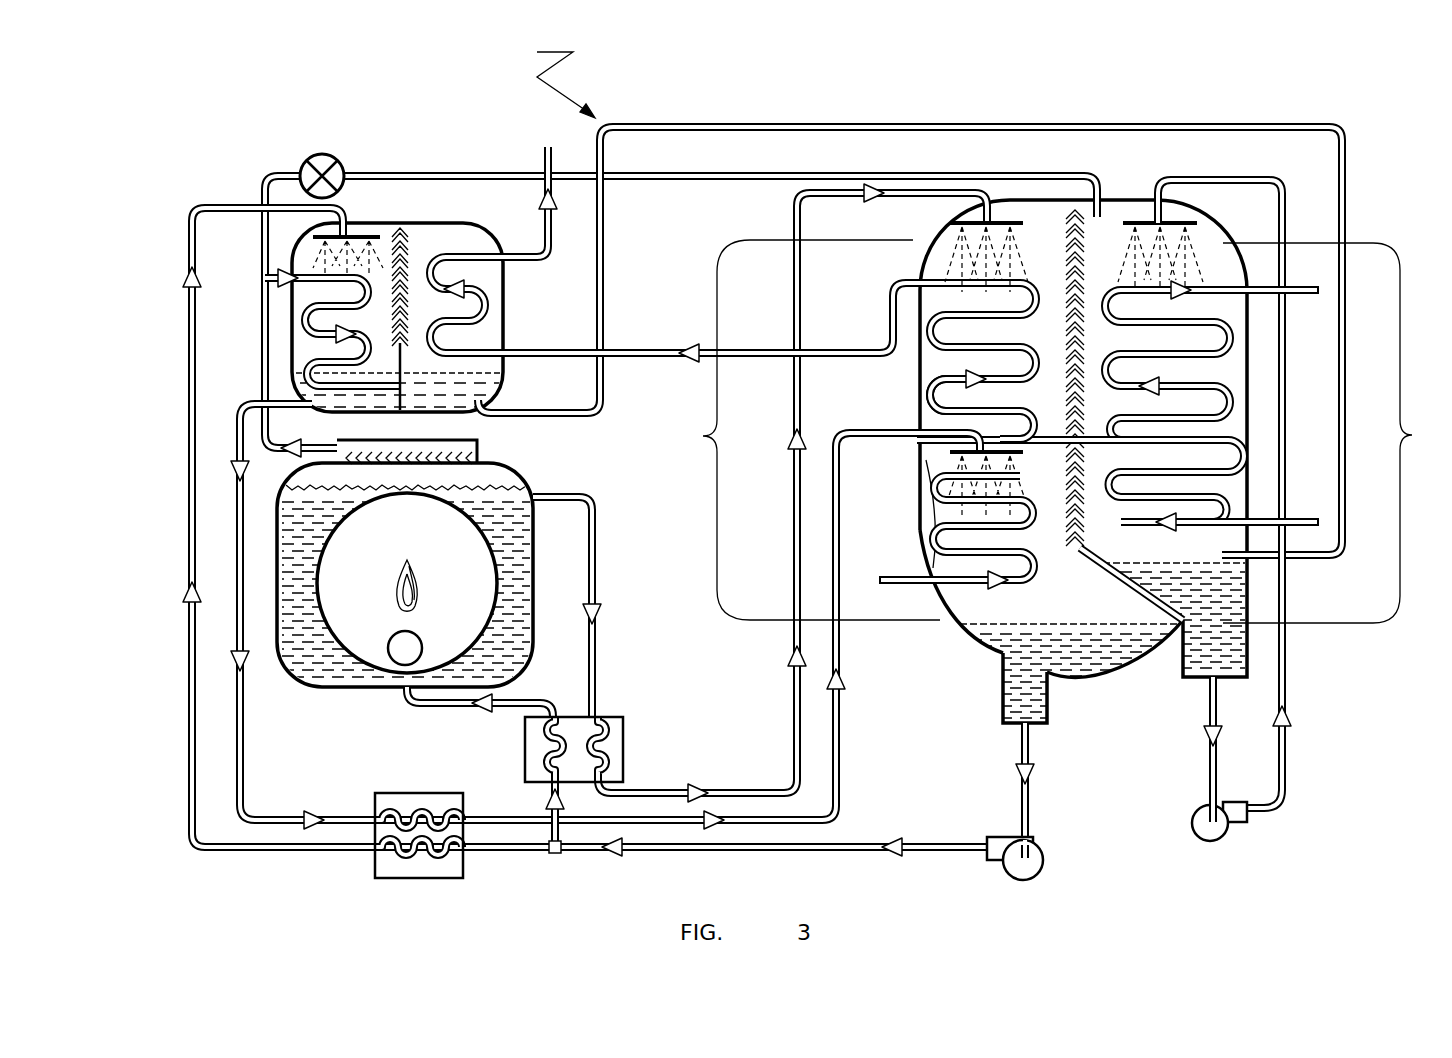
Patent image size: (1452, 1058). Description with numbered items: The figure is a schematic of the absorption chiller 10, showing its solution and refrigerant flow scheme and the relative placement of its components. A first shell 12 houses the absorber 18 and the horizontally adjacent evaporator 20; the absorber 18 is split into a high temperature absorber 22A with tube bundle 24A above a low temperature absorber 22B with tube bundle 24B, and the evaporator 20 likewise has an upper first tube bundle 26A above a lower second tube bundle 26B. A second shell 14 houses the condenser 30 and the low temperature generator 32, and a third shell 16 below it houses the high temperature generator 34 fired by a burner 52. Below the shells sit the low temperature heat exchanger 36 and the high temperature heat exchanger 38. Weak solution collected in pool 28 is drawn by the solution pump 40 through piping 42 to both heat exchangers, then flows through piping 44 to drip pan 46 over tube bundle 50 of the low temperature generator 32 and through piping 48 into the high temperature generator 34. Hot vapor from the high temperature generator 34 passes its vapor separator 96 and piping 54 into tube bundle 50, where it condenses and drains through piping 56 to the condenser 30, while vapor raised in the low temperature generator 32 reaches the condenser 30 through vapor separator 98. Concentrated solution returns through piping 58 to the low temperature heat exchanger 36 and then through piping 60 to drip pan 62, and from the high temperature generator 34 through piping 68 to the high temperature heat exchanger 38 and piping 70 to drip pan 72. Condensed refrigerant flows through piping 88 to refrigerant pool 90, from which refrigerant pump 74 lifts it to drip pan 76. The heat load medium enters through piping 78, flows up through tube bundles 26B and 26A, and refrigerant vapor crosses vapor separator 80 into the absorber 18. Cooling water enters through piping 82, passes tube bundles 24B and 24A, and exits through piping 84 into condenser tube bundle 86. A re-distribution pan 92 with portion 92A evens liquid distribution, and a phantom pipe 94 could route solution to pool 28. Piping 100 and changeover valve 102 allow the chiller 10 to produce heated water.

The chiller 10 is at (550, 79).
The first shell 12 is at (1105, 680).
The second shell 14 is at (503, 284).
The third shell 16 is at (524, 470).
The absorber 18 is at (803, 430).
The evaporator 20 is at (1335, 433).
The high temperature absorber 22A is at (992, 415).
The low temperature absorber 22B is at (1032, 616).
The tube bundle 24A is at (920, 327).
The tube bundle 24B is at (935, 528).
The first tube bundle 26A is at (1232, 338).
The second tube bundle 26B is at (1232, 470).
The pool 28 is at (1000, 655).
The condenser 30 is at (490, 336).
The low temperature generator 32 is at (300, 352).
The high temperature generator 34 is at (508, 556).
The low temperature heat exchanger 36 is at (390, 879).
The high temperature heat exchanger 38 is at (625, 720).
The solution pump 40 is at (1044, 856).
The piping 42 is at (872, 852).
The piping 44 is at (185, 681).
The drip pan 46 is at (352, 236).
The piping 48 is at (440, 716).
The tube bundle 50 is at (300, 320).
The burner 52 is at (423, 645).
The piping 54 is at (262, 388).
The piping 56 is at (386, 390).
The piping 58 is at (226, 496).
The piping 60 is at (850, 800).
The drip pan 62 is at (958, 452).
The piping 68 is at (600, 545).
The piping 70 is at (790, 752).
The drip pan 72 is at (1008, 212).
The refrigerant pump 74 is at (1195, 815).
The drip pan 76 is at (1136, 212).
The piping 78 is at (1313, 518).
The vapor separator 80 is at (1062, 215).
The piping 82 is at (912, 585).
The piping 84 is at (637, 362).
The tube bundle 86 is at (504, 312).
The piping 88 is at (853, 122).
The refrigerant pool 90 is at (1228, 662).
The liquid re-distribution pan 92 is at (1238, 436).
The portion of re-distribution pan 92A is at (930, 398).
The pipe 94 is at (912, 562).
The vapor separator 96 is at (465, 438).
The vapor separator 98 is at (412, 240).
The piping 100 is at (690, 172).
The changeover valve 102 is at (314, 158).